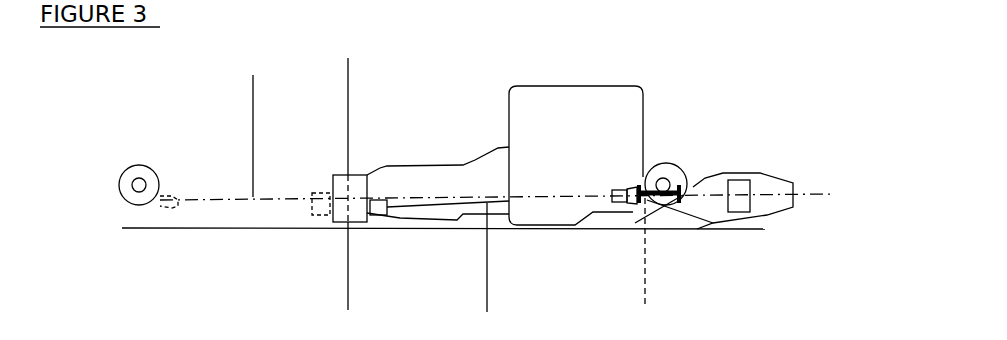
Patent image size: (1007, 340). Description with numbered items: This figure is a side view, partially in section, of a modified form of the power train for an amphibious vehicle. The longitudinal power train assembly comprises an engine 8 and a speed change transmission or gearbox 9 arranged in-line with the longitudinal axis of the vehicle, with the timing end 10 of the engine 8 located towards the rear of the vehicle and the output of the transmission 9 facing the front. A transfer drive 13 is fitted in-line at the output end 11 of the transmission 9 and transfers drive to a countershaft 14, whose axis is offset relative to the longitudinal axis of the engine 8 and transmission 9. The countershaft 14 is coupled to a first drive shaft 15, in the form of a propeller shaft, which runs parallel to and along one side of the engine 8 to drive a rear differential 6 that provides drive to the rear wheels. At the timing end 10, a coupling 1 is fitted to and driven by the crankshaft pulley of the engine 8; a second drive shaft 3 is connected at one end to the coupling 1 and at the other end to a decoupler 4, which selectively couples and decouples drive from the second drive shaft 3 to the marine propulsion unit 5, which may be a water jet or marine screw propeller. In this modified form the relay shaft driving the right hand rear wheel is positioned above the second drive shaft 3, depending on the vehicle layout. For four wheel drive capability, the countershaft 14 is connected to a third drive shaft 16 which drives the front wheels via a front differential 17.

The coupling 1 is at (640, 202).
The second drive shaft 3 is at (645, 265).
The decoupler 4 is at (683, 188).
The marine propulsion unit 5 is at (772, 183).
The rear differential 6 is at (667, 173).
The engine 8 is at (582, 156).
The speed change transmission or gearbox 9 is at (494, 179).
The timing end 10 is at (643, 107).
The output end 11 is at (383, 178).
The transfer drive 13 is at (350, 104).
The countershaft 14 is at (349, 257).
The first drive shaft 15 is at (487, 271).
The third drive shaft 16 is at (255, 124).
The front differential 17 is at (141, 167).